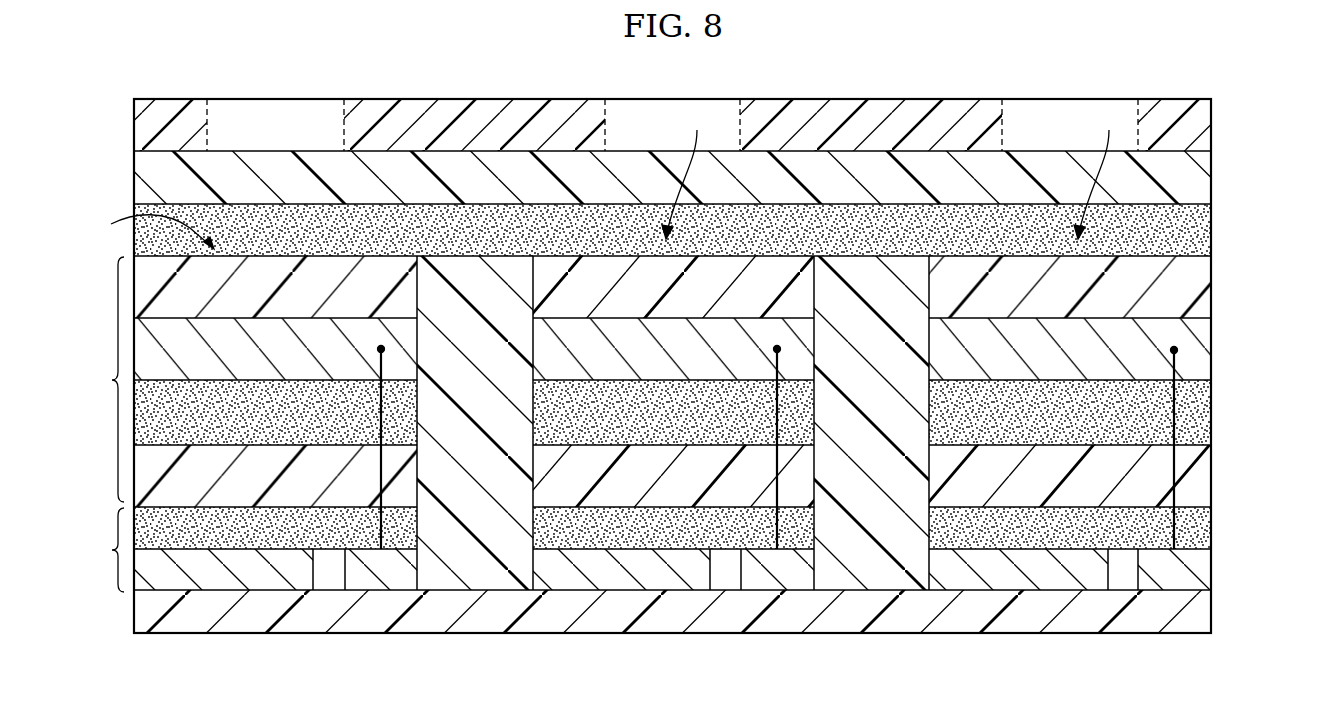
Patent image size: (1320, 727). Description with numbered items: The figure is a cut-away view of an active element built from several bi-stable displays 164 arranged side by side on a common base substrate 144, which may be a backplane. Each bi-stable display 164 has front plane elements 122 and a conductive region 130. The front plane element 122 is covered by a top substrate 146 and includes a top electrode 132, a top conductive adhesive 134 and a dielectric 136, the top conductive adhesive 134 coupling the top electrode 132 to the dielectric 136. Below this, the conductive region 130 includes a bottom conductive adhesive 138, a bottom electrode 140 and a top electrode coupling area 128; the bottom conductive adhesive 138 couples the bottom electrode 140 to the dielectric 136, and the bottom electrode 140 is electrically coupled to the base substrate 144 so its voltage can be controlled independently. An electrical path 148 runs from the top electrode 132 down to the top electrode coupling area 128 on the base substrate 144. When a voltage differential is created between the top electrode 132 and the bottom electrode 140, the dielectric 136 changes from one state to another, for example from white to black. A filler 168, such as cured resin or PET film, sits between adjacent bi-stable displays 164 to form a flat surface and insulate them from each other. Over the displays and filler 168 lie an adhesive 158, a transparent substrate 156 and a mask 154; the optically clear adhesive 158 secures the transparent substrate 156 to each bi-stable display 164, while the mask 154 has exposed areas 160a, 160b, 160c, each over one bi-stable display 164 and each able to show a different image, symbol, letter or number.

The front plane element 122 is at (97, 379).
The top electrode coupling area 128 is at (375, 582).
The conductive region 130 is at (97, 550).
The top electrode 132 is at (410, 335).
The top conductive adhesive 134 is at (410, 412).
The dielectric 136 is at (410, 475).
The bottom conductive adhesive 138 is at (410, 527).
The bottom electrode 140 is at (210, 582).
The base substrate 144 is at (478, 625).
The top substrate 146 is at (1203, 274).
The electrical path 148 is at (380, 425).
The mask 154 is at (1203, 112).
The transparent substrate 156 is at (1203, 163).
The adhesive 158 is at (1203, 228).
The exposed area 160a is at (274, 108).
The exposed area 160b is at (623, 107).
The exposed area 160c is at (1072, 107).
The bi-stable display 164 is at (598, 177).
The filler 168 is at (438, 582).